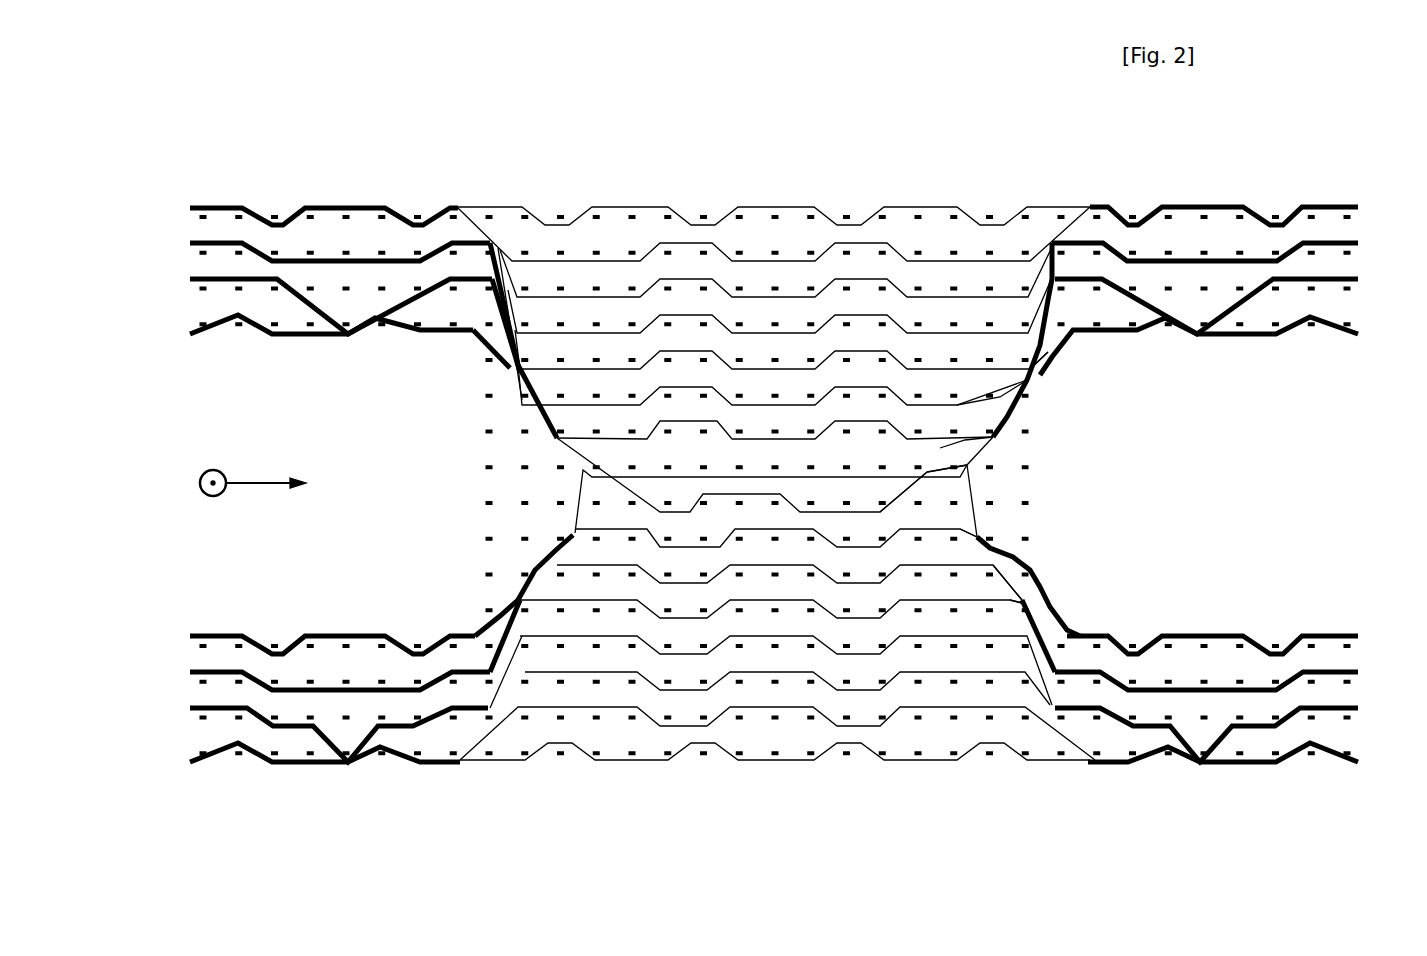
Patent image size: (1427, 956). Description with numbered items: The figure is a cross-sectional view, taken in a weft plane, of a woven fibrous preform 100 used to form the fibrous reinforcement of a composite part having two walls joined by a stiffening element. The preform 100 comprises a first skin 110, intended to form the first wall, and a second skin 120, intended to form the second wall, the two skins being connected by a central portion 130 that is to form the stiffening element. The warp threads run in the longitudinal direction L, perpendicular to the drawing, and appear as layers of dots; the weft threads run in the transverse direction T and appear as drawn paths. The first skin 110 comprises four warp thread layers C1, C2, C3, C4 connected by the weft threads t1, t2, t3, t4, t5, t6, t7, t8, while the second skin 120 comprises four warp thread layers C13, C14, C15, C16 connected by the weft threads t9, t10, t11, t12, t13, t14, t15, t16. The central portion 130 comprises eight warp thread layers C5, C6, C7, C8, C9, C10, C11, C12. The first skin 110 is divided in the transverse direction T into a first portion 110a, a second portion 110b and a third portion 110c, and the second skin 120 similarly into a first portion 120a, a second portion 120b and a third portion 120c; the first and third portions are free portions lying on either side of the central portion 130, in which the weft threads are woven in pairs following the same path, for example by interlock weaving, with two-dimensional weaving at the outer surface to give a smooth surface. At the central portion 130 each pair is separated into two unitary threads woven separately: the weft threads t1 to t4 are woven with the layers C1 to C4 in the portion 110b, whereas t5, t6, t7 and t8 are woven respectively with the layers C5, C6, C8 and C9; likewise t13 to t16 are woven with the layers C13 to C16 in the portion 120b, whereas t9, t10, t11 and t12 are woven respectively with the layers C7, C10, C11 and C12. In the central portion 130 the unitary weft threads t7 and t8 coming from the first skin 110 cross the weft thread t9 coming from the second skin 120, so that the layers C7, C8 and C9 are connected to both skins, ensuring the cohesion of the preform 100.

The fibrous preform 100 is at (1150, 168).
The first skin 110 is at (348, 190).
The first portion of the first skin 110a is at (432, 358).
The second portion of the first skin 110b is at (1093, 177).
The third portion of the first skin 110c is at (1355, 358).
The second skin 120 is at (321, 802).
The first portion of the second skin 120a is at (432, 613).
The second portion of the second skin 120b is at (1093, 795).
The third portion of the second skin 120c is at (1355, 613).
The central portion 130 is at (474, 350).
The weft thread t1 is at (487, 206).
The weft thread t2 is at (499, 245).
The weft thread t3 is at (578, 296).
The weft thread t4 is at (578, 333).
The weft thread t5 is at (578, 369).
The weft thread t6 is at (578, 405).
The weft thread t7 is at (578, 439).
The weft thread t8 is at (686, 512).
The weft thread t9 is at (688, 422).
The weft thread t10 is at (651, 536).
The weft thread t11 is at (614, 564).
The weft thread t12 is at (614, 600).
The weft thread t13 is at (614, 636).
The weft thread t14 is at (614, 672).
The weft thread t15 is at (614, 708).
The weft thread t16 is at (610, 762).
The warp thread layer C1 is at (1342, 215).
The warp thread layer C2 is at (1342, 251).
The warp thread layer C3 is at (1342, 287).
The warp thread layer C4 is at (1342, 323).
The warp thread layer C5 is at (1060, 362).
The warp thread layer C6 is at (1030, 397).
The warp thread layer C7 is at (998, 430).
The warp thread layer C8 is at (968, 465).
The warp thread layer C9 is at (960, 503).
The warp thread layer C10 is at (990, 541).
The warp thread layer C11 is at (1028, 573).
The warp thread layer C12 is at (1047, 610).
The warp thread layer C13 is at (1342, 644).
The warp thread layer C14 is at (1342, 680).
The warp thread layer C15 is at (1342, 716).
The warp thread layer C16 is at (1342, 752).
The longitudinal direction L is at (213, 473).
The transverse direction T is at (276, 485).